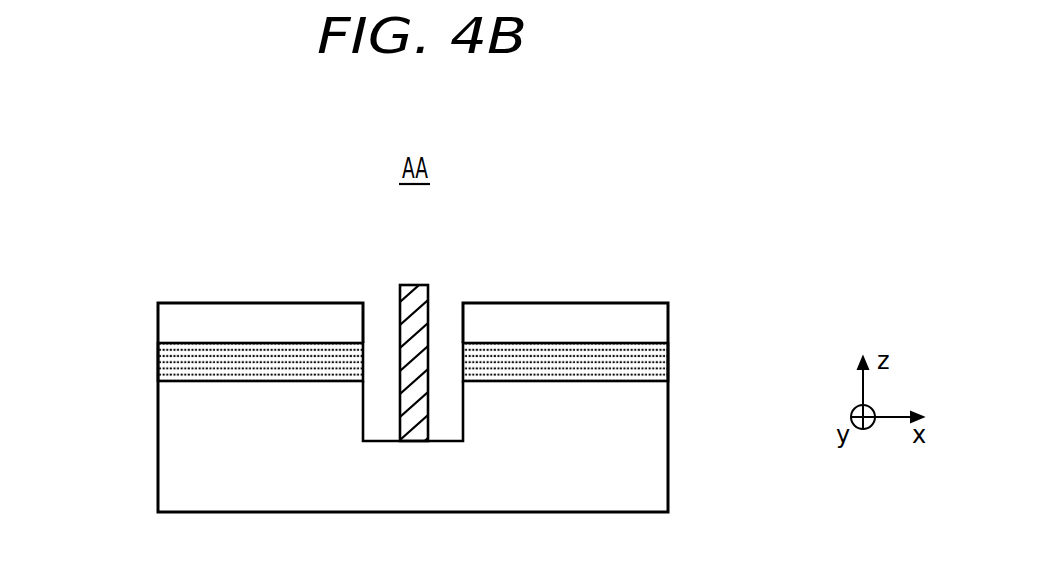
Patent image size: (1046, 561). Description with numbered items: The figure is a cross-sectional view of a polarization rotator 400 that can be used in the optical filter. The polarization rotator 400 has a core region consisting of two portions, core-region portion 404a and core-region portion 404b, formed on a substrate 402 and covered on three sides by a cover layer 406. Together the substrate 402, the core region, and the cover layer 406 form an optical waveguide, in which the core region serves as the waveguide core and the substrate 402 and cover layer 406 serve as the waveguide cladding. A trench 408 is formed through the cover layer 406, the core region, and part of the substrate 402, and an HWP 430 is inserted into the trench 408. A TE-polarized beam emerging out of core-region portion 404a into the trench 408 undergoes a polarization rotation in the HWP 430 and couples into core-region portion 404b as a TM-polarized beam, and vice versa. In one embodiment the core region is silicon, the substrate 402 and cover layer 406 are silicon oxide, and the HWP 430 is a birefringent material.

The polarization rotator 400 is at (392, 118).
The substrate 402 is at (668, 463).
The core-region portion 404a is at (158, 361).
The core-region portion 404b is at (668, 364).
The cover layer 406 is at (668, 323).
The trench 408 is at (455, 297).
The HWP 430 is at (414, 284).